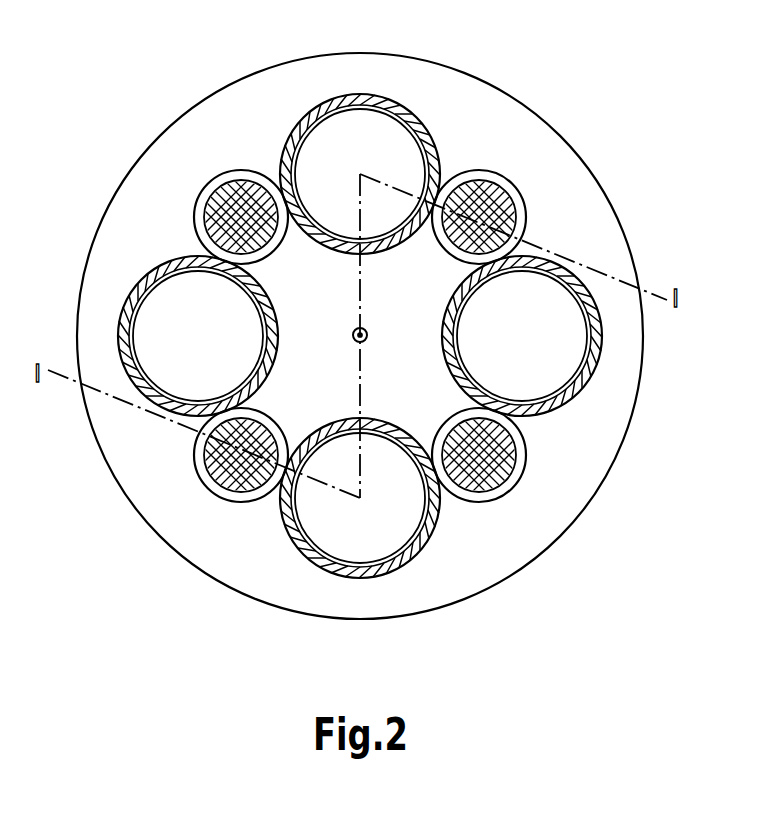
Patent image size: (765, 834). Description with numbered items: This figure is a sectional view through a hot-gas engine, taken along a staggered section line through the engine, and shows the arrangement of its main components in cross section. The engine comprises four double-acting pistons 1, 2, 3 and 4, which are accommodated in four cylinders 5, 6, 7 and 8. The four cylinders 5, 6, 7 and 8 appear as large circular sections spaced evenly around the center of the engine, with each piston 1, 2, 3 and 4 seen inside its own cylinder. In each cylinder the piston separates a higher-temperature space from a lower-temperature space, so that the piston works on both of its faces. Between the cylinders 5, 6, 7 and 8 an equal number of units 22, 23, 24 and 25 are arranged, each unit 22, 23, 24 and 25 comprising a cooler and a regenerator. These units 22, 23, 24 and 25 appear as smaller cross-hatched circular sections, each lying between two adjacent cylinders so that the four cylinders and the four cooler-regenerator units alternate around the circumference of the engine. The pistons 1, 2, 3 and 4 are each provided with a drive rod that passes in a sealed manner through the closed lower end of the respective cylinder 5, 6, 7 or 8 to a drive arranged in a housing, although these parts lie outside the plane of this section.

The double-acting piston 1 is at (347, 539).
The double-acting piston 2 is at (556, 339).
The double-acting piston 3 is at (360, 133).
The double-acting piston 4 is at (164, 328).
The cylinder 5 is at (362, 573).
The cylinder 6 is at (593, 357).
The cylinder 7 is at (348, 98).
The cylinder 8 is at (168, 265).
The unit comprising a cooler and a regenerator 22 is at (210, 482).
The unit comprising a cooler and a regenerator 23 is at (507, 483).
The unit comprising a cooler and a regenerator 24 is at (507, 182).
The unit comprising a cooler and a regenerator 25 is at (220, 182).